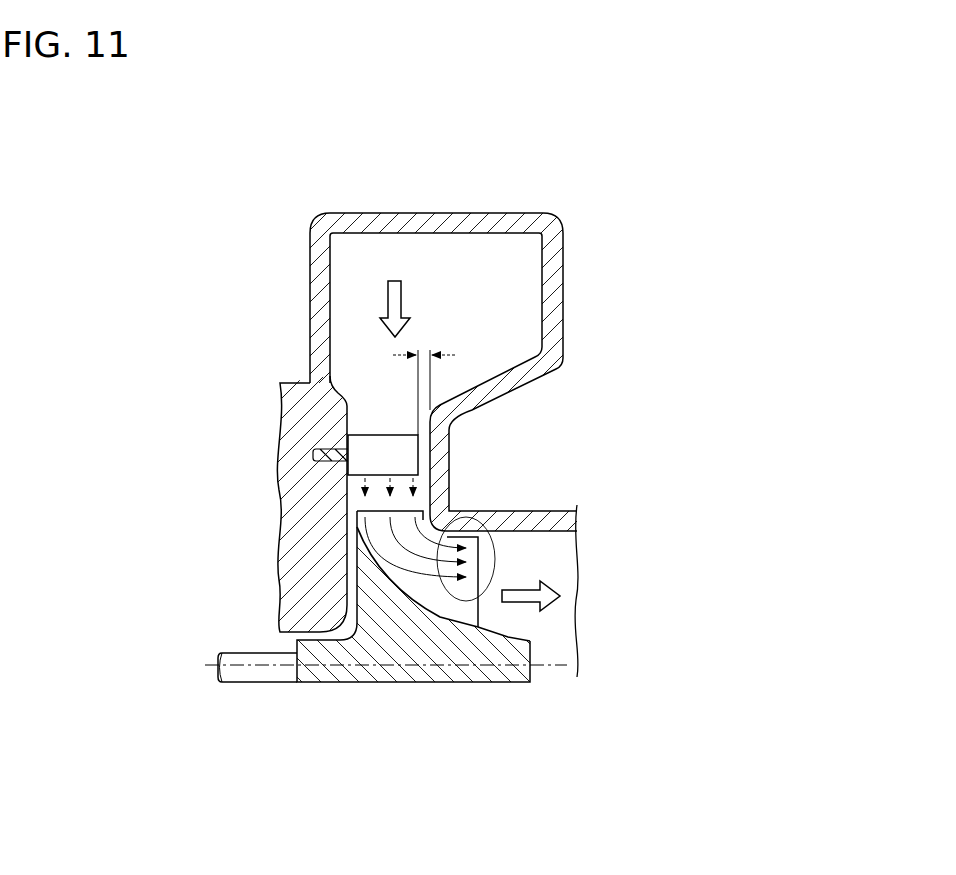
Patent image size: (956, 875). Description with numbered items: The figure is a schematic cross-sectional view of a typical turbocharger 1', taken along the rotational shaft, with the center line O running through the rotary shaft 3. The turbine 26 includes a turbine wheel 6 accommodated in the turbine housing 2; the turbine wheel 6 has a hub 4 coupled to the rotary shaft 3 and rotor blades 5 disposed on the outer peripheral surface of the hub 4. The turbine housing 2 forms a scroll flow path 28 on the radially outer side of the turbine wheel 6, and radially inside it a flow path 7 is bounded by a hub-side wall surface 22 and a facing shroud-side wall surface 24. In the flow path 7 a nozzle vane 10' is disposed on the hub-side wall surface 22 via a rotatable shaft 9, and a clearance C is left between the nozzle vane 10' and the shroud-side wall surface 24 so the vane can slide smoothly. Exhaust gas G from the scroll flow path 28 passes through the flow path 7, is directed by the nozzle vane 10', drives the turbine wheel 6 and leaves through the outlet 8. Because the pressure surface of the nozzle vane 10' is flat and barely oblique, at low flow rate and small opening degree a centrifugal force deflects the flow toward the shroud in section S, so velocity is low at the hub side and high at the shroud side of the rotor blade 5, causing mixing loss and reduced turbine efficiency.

The turbocharger 1' is at (391, 439).
The turbine housing 2 is at (469, 345).
The rotary shaft 3 is at (262, 684).
The hub 4 is at (463, 629).
The rotor blade 5 is at (430, 598).
The turbine wheel 6 is at (546, 649).
The flow path 7 is at (275, 481).
The outlet 8 is at (543, 622).
The rotatable shaft 9 is at (323, 449).
The nozzle vane 10' is at (432, 459).
The hub-side wall surface 22 is at (348, 416).
The shroud-side wall surface 24 is at (438, 428).
The turbine 26 is at (592, 208).
The scroll flow path 28 is at (498, 250).
The clearance C is at (424, 356).
The exhaust gas G is at (402, 297).
The section S is at (494, 549).
The axis O is at (557, 668).